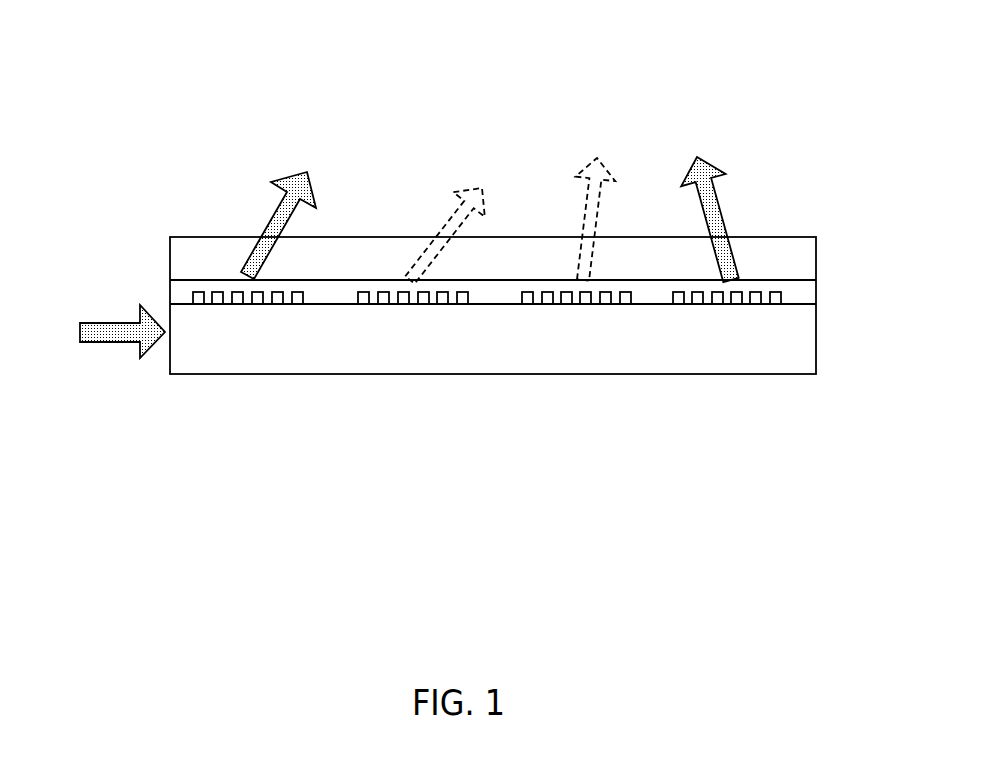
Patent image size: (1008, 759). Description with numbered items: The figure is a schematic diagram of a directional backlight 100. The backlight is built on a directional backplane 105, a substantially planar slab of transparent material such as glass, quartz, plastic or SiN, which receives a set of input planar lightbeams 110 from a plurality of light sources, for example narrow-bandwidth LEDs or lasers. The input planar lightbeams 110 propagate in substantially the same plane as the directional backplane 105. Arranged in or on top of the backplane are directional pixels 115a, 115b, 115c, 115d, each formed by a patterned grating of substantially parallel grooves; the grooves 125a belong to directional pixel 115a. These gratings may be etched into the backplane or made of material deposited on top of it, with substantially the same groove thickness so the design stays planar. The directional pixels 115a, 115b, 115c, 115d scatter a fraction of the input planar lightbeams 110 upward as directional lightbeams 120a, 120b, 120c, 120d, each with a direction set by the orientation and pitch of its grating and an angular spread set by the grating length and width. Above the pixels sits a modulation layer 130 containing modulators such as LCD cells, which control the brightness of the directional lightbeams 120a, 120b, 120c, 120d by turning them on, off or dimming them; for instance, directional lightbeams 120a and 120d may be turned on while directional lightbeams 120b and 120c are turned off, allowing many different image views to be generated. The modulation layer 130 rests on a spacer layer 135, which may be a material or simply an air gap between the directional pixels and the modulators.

The directional backlight 100 is at (471, 66).
The directional backplane 105 is at (797, 345).
The input planar lightbeams 110 is at (115, 322).
The directional pixel 115a is at (200, 292).
The directional pixel 115b is at (408, 293).
The directional pixel 115c is at (612, 292).
The directional pixel 115d is at (717, 292).
The directional lightbeam 120a is at (270, 213).
The directional lightbeam 120b is at (445, 222).
The directional lightbeam 120c is at (580, 208).
The directional lightbeam 120d is at (692, 175).
The grooves 125a is at (237, 303).
The modulation layer 130 is at (215, 255).
The spacer layer 135 is at (805, 293).